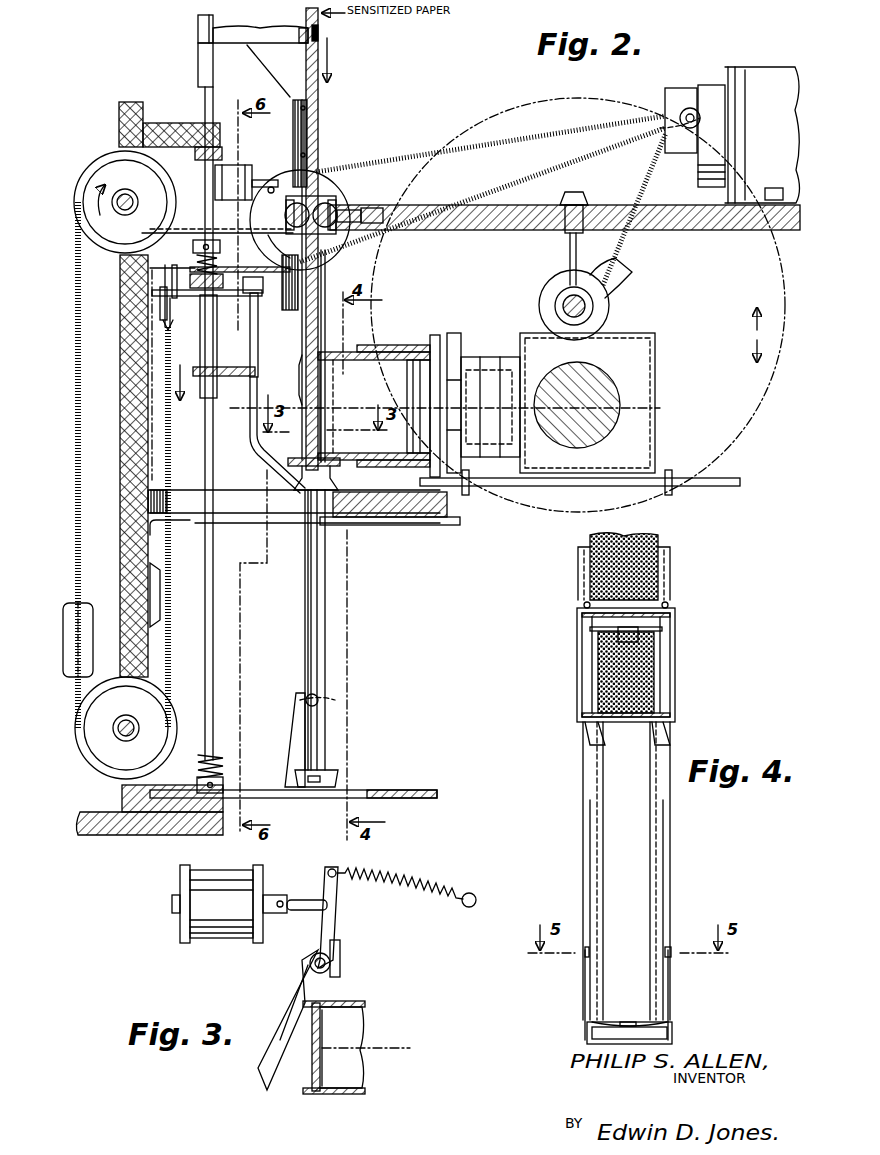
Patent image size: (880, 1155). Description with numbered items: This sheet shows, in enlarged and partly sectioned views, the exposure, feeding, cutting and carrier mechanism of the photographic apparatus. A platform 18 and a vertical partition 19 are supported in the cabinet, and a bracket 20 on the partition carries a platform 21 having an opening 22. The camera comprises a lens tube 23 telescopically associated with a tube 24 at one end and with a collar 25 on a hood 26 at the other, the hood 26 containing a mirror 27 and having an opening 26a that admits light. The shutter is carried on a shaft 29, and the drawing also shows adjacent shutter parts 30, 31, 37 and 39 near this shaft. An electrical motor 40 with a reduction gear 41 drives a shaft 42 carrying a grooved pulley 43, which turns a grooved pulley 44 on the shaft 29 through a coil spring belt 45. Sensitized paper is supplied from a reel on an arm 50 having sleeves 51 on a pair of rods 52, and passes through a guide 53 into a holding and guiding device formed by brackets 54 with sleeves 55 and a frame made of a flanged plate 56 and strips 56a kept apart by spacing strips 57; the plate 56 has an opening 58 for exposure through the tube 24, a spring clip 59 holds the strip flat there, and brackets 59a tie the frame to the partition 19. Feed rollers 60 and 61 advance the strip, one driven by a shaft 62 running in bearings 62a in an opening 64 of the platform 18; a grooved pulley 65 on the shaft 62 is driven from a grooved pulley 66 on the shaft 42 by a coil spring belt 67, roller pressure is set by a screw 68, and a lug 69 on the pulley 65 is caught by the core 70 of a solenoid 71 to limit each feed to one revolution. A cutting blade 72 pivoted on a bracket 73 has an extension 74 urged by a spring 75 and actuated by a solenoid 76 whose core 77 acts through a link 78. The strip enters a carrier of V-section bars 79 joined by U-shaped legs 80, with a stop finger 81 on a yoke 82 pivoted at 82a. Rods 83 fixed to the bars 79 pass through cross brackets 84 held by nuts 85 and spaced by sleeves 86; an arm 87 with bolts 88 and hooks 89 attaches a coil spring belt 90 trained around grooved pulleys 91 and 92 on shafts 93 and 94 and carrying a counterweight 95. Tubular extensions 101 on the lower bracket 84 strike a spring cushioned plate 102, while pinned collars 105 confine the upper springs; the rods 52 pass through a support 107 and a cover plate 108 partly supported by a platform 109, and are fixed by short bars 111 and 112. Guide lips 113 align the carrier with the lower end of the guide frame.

In FIG. 2, the platform 18 is at (712, 232).
In FIG. 2, the vertical partition 19 is at (120, 490).
In FIG. 2, the bracket 20 is at (150, 556).
In FIG. 2, the platform 21 is at (415, 516).
In FIG. 2, the opening 22 is at (248, 503).
In FIG. 2, the lens tube 23 is at (474, 345).
In FIG. 2, the tube 24 is at (362, 348).
In FIG. 3, the tube 24 is at (362, 1090).
In FIG. 2, the collar 25 is at (490, 356).
In FIG. 2, the hood 26 is at (643, 332).
In FIG. 2, the opening 26a is at (615, 428).
In FIG. 2, the mirror 27 is at (605, 398).
In FIG. 2, the shaft 29 is at (562, 304).
In FIG. 2, the lever 30 is at (560, 292).
In FIG. 2, the bolt 31 is at (563, 250).
In FIG. 2, the rod 37 is at (710, 486).
In FIG. 2, the pin 39 is at (468, 495).
In FIG. 2, the electrical motor 40 is at (768, 67).
In FIG. 2, the reduction gear 41 is at (708, 85).
In FIG. 2, the shaft 42 is at (665, 110).
In FIG. 2, the grooved pulley 43 is at (688, 108).
In FIG. 2, the grooved pulley 44 is at (625, 283).
In FIG. 2, the coil spring belt 45 is at (628, 172).
In FIG. 2, the arm 50 is at (272, 28).
In FIG. 2, the sleeves 51 is at (213, 30).
In FIG. 2, the rods 52 is at (204, 96).
In FIG. 2, the guide 53 is at (320, 33).
In FIG. 2, the brackets 54 is at (272, 82).
In FIG. 2, the sleeves 55 is at (198, 58).
In FIG. 2, the flanged plate 56 is at (314, 178).
In FIG. 3, the flanged plate 56 is at (316, 1093).
In FIG. 2, the strips 56a is at (318, 258).
In FIG. 3, the strips 56a is at (362, 1012).
In FIG. 4, the strips 56a is at (630, 564).
In FIG. 3, the spacing strips 57 is at (330, 990).
In FIG. 2, the opening 58 is at (320, 397).
In FIG. 3, the opening 58 is at (340, 1094).
In FIG. 4, the opening 58 is at (660, 675).
In FIG. 2, the spring clip 59 is at (300, 380).
In FIG. 4, the spring clip 59 is at (620, 645).
In FIG. 2, the brackets 59a is at (252, 326).
In FIG. 2, the feed roller 60 is at (286, 220).
In FIG. 2, the feed roller 61 is at (337, 212).
In FIG. 2, the shaft 62 is at (344, 188).
In FIG. 2, the bearings 62a is at (355, 250).
In FIG. 2, the opening 64 is at (478, 230).
In FIG. 2, the grooved pulley 65 is at (352, 182).
In FIG. 2, the grooved pulley 66 is at (712, 120).
In FIG. 2, the coil spring belt 67 is at (500, 158).
In FIG. 2, the screw 68 is at (395, 203).
In FIG. 2, the lug 69 is at (270, 177).
In FIG. 2, the spring-projected core 70 is at (268, 178).
In FIG. 2, the solenoid 71 is at (222, 183).
In FIG. 2, the cutting blade 72 is at (290, 465).
In FIG. 3, the cutting blade 72 is at (290, 1012).
In FIG. 3, the bracket 73 is at (340, 958).
In FIG. 3, the extension 74 is at (333, 920).
In FIG. 3, the spring 75 is at (410, 885).
In FIG. 3, the solenoid 76 is at (205, 912).
In FIG. 3, the core 77 is at (275, 895).
In FIG. 3, the link 78 is at (305, 910).
In FIG. 2, the bars 79 is at (312, 629).
In FIG. 4, the bars 79 is at (590, 831).
In FIG. 2, the U-shaped legs 80 is at (338, 780).
In FIG. 4, the U-shaped legs 80 is at (587, 1033).
In FIG. 2, the stop finger 81 is at (313, 785).
In FIG. 4, the stop finger 81 is at (628, 1020).
In FIG. 2, the yoke 82 is at (290, 750).
In FIG. 4, the yoke 82 is at (672, 996).
In FIG. 2, the pivot 82a is at (337, 698).
In FIG. 4, the pivot 82a is at (672, 950).
In FIG. 2, the rods 83 is at (262, 466).
In FIG. 2, the cross brackets 84 is at (235, 292).
In FIG. 2, the nuts 85 is at (222, 278).
In FIG. 2, the spacing sleeves 86 is at (200, 353).
In FIG. 2, the arm 87 is at (152, 292).
In FIG. 2, the bolts 88 is at (172, 284).
In FIG. 2, the hooks 89 is at (165, 327).
In FIG. 2, the coil spring belt 90 is at (73, 500).
In FIG. 2, the grooved pulley 91 is at (82, 190).
In FIG. 2, the grooved pulley 92 is at (95, 752).
In FIG. 2, the shaft 93 is at (117, 202).
In FIG. 2, the shaft 94 is at (118, 730).
In FIG. 2, the weight 95 is at (63, 632).
In FIG. 2, the tubular extensions 101 is at (200, 387).
In FIG. 2, the spring cushioned plate 102 is at (222, 756).
In FIG. 2, the pinned collars 105 is at (192, 246).
In FIG. 2, the support 107 is at (150, 122).
In FIG. 2, the cover plate 108 is at (420, 790).
In FIG. 2, the platform 109 is at (140, 832).
In FIG. 2, the short bar 111 is at (196, 158).
In FIG. 2, the short bar 112 is at (223, 800).
In FIG. 2, the guide lips 113 is at (333, 482).
In FIG. 4, the guide lips 113 is at (665, 740).